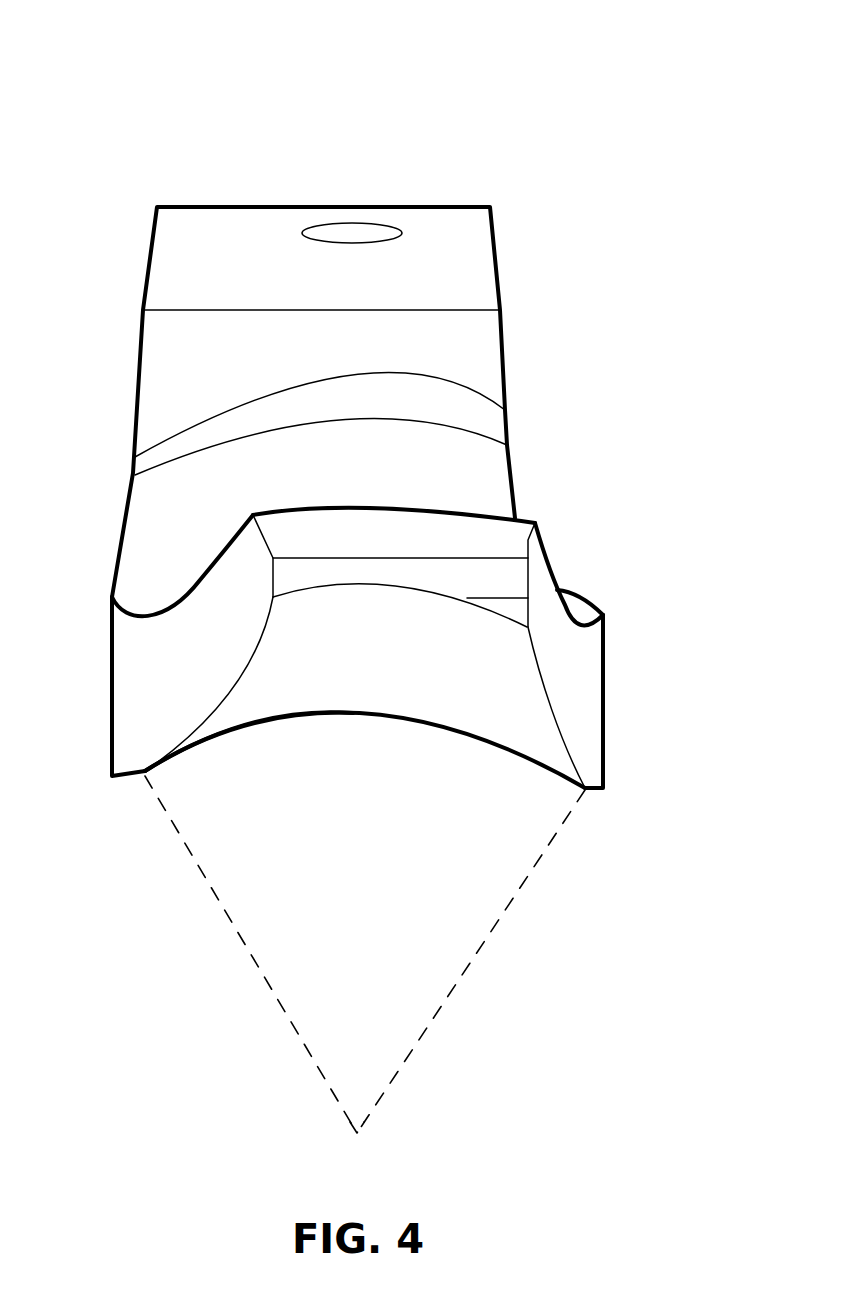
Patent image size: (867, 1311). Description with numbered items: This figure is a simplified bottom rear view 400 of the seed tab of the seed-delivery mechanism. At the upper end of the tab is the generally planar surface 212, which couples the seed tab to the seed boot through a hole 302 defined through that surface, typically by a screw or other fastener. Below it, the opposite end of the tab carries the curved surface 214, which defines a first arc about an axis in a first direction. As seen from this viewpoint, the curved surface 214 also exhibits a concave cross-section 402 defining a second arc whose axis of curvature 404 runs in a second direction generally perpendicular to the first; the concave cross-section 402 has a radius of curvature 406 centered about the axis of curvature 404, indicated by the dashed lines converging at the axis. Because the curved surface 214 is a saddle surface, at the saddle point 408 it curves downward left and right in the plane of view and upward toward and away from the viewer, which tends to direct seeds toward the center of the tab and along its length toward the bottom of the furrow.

The blade body assembly 400 is at (498, 93).
The generally planar surface 212 is at (182, 258).
The hole 302 is at (347, 232).
The curved surface 214 is at (535, 722).
The concave cross-section 402 is at (225, 743).
The saddle point 408 is at (392, 695).
The radius of curvature 406 is at (248, 955).
The axis of curvature 404 is at (357, 1133).